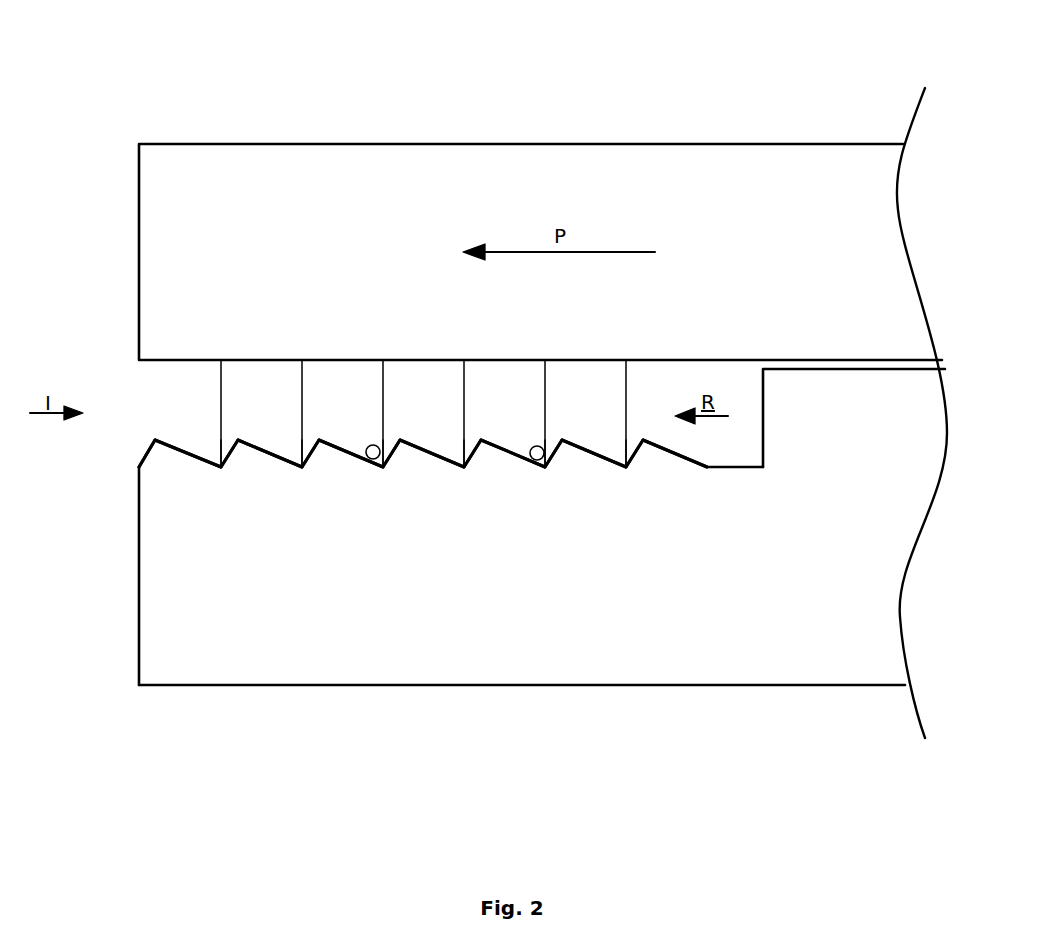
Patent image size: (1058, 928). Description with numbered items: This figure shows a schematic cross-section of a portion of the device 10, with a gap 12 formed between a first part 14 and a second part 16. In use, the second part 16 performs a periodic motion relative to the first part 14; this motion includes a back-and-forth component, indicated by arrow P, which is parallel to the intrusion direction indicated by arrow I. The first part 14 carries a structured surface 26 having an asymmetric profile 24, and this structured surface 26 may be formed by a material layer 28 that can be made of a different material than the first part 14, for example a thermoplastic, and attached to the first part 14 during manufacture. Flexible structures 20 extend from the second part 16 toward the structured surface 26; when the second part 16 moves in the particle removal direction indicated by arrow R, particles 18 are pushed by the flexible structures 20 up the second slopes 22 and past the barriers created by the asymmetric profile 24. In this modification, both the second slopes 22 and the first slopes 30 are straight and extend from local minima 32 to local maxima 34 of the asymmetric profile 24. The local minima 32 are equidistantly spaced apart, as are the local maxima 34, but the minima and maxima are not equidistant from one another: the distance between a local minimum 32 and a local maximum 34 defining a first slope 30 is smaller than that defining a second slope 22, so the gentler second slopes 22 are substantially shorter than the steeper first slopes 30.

The device 10 is at (769, 56).
The gap 12 is at (827, 418).
The first part 14 is at (407, 685).
The second part 16 is at (408, 144).
The particles 18 is at (372, 462).
The flexible structures 20 is at (223, 377).
The second slopes 22 is at (211, 465).
The asymmetric profile 24 is at (146, 387).
The structured surface 26 is at (672, 390).
The material layer 28 is at (736, 468).
The first slopes 30 is at (152, 443).
The local minima 32 is at (220, 470).
The local maxima 34 is at (154, 438).